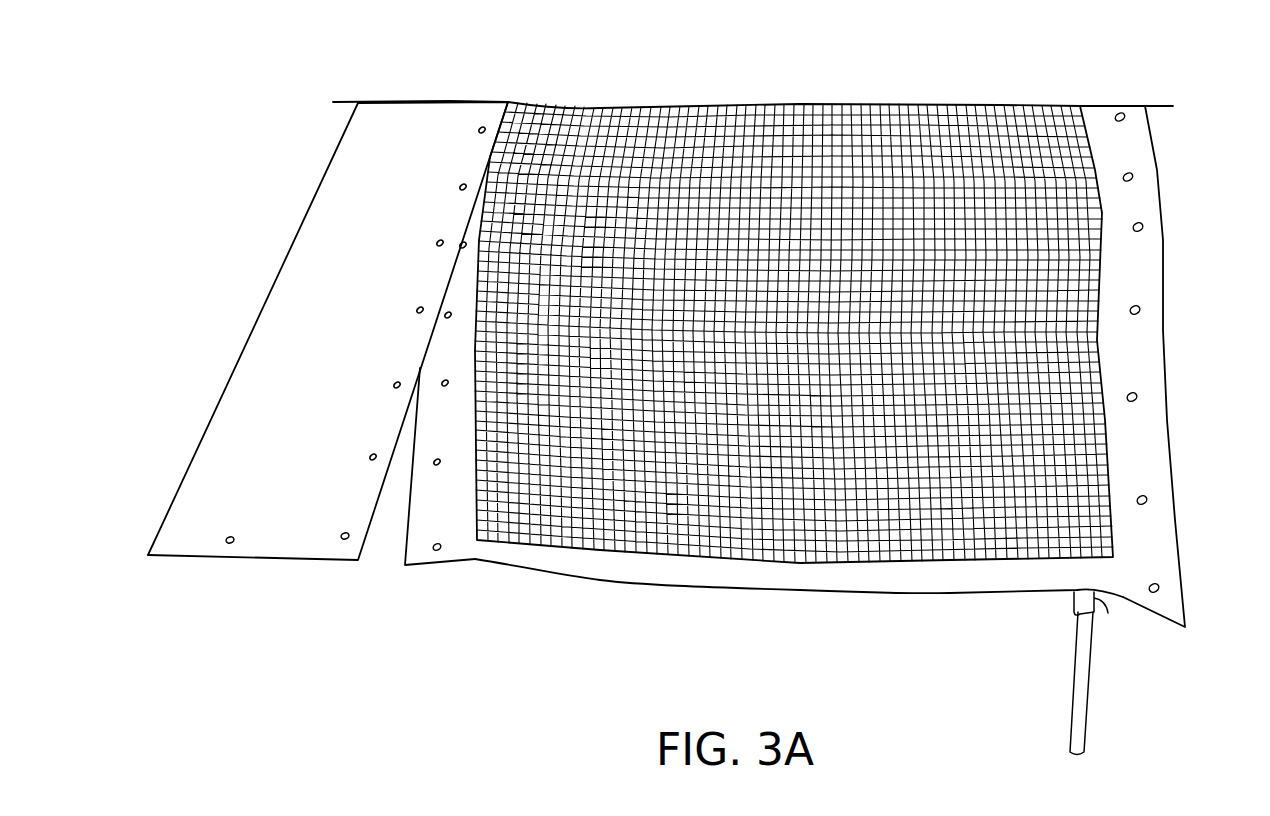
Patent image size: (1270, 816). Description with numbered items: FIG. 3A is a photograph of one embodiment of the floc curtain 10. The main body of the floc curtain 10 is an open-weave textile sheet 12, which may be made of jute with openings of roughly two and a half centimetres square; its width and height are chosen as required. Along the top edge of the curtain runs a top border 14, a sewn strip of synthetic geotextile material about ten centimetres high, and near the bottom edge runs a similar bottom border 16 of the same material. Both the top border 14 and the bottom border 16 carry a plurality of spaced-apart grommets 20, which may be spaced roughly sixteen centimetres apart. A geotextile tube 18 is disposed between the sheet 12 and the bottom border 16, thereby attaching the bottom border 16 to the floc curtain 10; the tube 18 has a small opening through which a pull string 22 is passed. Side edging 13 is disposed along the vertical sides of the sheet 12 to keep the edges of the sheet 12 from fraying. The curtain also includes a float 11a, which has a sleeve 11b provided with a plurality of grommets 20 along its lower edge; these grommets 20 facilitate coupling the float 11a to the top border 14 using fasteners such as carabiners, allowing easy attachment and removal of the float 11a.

The floc curtain 10 is at (704, 60).
The float 11a is at (194, 414).
The sleeve 11b is at (385, 166).
The open-weave textile sheet 12 is at (1050, 213).
The side edging 13 is at (767, 578).
The top border 14 is at (455, 512).
The bottom border 16 is at (1155, 466).
The geotextile tube 18 is at (1074, 598).
The grommets 20 is at (443, 381).
The pull string 22 is at (1082, 690).